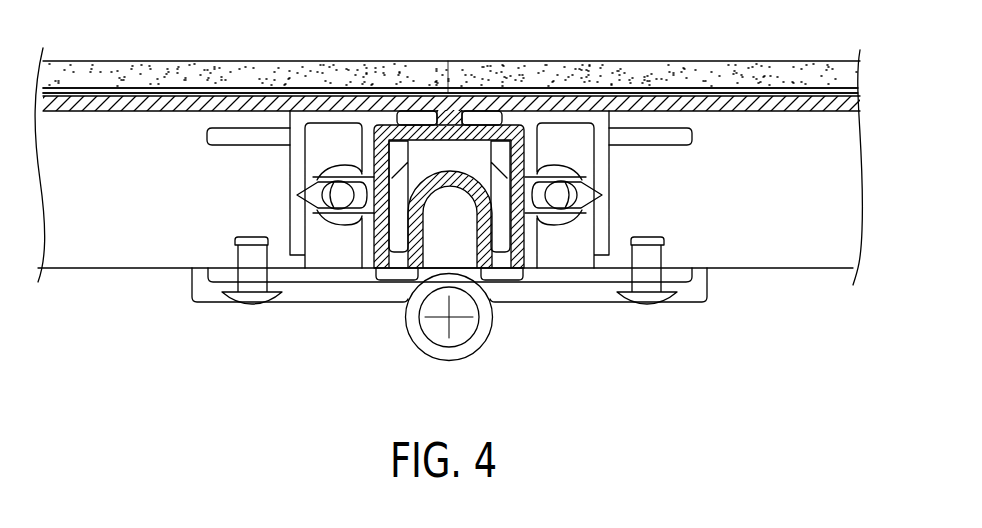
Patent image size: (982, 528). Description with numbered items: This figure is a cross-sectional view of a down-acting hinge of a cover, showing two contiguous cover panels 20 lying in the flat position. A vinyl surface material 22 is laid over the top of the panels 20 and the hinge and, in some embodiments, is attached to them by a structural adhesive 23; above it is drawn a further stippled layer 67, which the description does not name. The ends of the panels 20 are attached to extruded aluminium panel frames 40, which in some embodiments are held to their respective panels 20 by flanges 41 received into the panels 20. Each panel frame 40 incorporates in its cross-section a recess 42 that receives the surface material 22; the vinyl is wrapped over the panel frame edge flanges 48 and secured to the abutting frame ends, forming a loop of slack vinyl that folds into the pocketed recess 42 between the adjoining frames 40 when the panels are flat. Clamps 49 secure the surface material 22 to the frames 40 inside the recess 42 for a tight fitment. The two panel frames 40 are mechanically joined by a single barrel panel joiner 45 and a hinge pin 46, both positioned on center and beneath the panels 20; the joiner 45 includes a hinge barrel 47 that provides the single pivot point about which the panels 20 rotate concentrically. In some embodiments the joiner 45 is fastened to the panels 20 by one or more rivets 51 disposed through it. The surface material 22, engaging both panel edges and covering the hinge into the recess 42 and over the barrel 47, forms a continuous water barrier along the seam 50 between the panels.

The cover panel 20 is at (132, 201).
The vinyl surface material 22 is at (607, 93).
The structural adhesive 23 is at (557, 108).
The insulation layer 67 is at (315, 70).
The panel frame 40 is at (362, 270).
The flange 41 is at (215, 133).
The recess 42 is at (459, 164).
The single barrel panel joiner 45 is at (322, 288).
The hinge pin 46 is at (462, 330).
The hinge barrel 47 is at (435, 347).
The panel frame edge flange 48 is at (402, 115).
The clamp 49 is at (398, 245).
The seam 50 is at (447, 112).
The rivet 51 is at (250, 292).